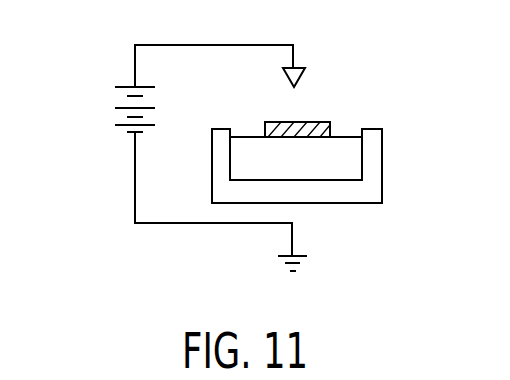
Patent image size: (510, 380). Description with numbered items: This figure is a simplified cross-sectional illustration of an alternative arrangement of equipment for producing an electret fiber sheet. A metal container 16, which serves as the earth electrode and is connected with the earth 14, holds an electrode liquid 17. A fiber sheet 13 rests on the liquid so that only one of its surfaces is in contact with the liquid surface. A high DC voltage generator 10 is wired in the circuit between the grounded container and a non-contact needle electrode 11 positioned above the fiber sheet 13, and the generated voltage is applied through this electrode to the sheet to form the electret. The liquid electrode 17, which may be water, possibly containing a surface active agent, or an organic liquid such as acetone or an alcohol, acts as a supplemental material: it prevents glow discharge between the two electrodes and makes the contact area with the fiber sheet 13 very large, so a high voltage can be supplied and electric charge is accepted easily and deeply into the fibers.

The high voltage generator 10 is at (131, 97).
The non-contact needle electrode 11 is at (300, 74).
The fiber sheet 13 is at (281, 122).
The earth 14 is at (281, 262).
The metal container 16 is at (382, 181).
The liquid electrode 17 is at (344, 139).